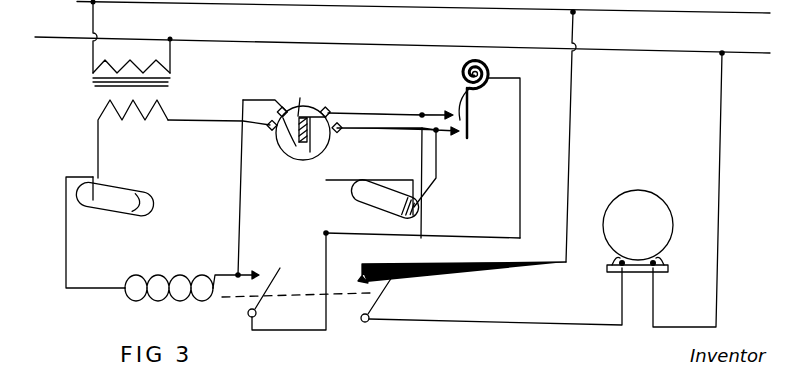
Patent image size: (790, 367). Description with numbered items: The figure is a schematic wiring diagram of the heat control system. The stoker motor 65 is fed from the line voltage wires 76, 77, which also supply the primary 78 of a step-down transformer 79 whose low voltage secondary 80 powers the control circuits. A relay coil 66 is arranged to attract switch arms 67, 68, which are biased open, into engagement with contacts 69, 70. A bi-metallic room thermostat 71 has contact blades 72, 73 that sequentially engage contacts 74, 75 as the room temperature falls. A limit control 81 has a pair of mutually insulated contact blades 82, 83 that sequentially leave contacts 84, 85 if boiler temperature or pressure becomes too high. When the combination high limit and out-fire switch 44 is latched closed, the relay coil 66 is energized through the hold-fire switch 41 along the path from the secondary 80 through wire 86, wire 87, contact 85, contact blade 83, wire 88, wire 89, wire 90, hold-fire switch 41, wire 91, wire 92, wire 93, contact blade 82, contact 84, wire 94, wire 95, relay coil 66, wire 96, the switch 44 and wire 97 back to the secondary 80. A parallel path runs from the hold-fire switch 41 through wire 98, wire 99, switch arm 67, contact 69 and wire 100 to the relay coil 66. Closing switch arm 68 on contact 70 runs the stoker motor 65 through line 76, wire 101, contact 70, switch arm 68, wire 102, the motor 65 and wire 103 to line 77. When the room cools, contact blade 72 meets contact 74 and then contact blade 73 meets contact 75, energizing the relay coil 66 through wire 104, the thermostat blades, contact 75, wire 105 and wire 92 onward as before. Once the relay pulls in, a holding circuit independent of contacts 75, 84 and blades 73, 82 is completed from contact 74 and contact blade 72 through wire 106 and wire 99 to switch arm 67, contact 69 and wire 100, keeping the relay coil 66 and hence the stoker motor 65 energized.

The hold-fire switch 41 is at (376, 203).
The combination high limit and out-fire switch 44 is at (134, 195).
The stoker motor 65 is at (660, 195).
The relay coil 66 is at (194, 282).
The switch arm 67 is at (270, 292).
The switch arm 68 is at (384, 290).
The contact 69 is at (275, 265).
The contact 70 is at (372, 278).
The bi-metallic room thermostat 71 is at (490, 73).
The contact blade 72 is at (470, 126).
The contact blade 73 is at (461, 108).
The contact 74 is at (460, 134).
The contact 75 is at (447, 112).
The line voltage wire 76 is at (432, 5).
The line voltage wire 77 is at (344, 46).
The primary 78 is at (112, 71).
The step-down transformer 79 is at (176, 79).
The secondary 80 is at (125, 110).
The limit control 81 is at (332, 141).
The contact blade 82 is at (300, 100).
The contact blade 83 is at (315, 152).
The contact 84 is at (285, 150).
The contact 85 is at (300, 156).
The wire 86 is at (222, 123).
The wire 87 is at (283, 134).
The wire 88 is at (345, 126).
The wire 89 is at (381, 128).
The wire 90 is at (438, 186).
The wire 91 is at (413, 186).
The wire 92 is at (335, 110).
The wire 93 is at (330, 97).
The wire 94 is at (292, 112).
The wire 95 is at (240, 200).
The wire 96 is at (66, 246).
The wire 97 is at (98, 165).
The wire 98 is at (327, 212).
The wire 99 is at (328, 250).
The wire 100 is at (247, 280).
The wire 101 is at (570, 137).
The wire 102 is at (528, 321).
The wire 103 is at (716, 255).
The wire 104 is at (441, 165).
The wire 105 is at (428, 112).
The wire 106 is at (522, 140).